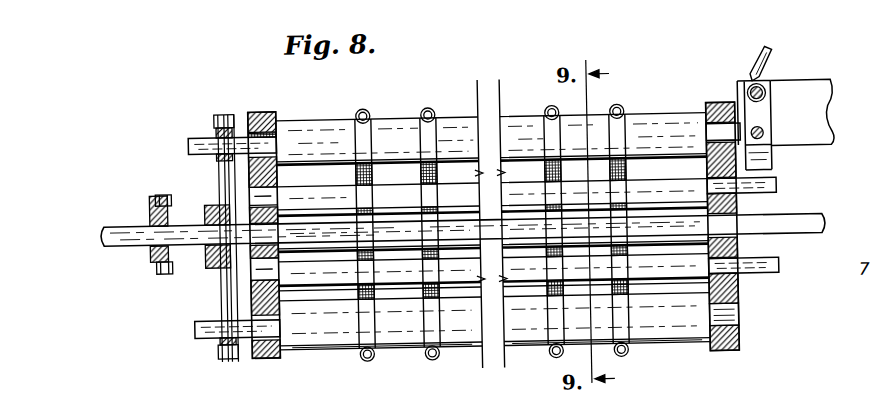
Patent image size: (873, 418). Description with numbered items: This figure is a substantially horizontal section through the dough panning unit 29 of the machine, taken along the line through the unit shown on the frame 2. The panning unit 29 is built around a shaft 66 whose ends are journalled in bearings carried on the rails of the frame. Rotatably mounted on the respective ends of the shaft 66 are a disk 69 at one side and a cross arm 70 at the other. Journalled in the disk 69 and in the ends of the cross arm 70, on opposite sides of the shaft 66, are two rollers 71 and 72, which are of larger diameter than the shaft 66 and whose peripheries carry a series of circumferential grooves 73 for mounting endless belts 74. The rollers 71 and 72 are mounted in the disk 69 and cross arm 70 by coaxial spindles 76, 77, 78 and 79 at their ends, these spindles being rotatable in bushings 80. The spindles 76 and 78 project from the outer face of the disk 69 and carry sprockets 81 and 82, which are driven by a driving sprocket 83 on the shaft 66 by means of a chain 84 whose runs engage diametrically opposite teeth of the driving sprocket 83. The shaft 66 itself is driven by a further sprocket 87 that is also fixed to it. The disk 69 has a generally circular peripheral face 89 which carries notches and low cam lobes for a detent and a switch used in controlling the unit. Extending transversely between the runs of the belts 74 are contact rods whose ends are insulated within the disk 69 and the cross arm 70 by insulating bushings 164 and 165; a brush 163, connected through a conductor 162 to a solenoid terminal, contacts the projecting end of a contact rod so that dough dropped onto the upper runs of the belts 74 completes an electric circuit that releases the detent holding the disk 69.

The frame plate 2 is at (833, 88).
The panning unit 29 is at (282, 349).
The shaft 66 is at (733, 253).
The disk 69 is at (280, 112).
The cross arm 70 is at (738, 298).
The roller 71 is at (662, 339).
The roller 72 is at (522, 121).
The circumferential grooves 73 is at (433, 128).
The endless belts 74 is at (628, 360).
The spindle 76 is at (197, 138).
The spindle 77 is at (712, 108).
The spindle 78 is at (210, 331).
The spindle 79 is at (738, 322).
The bushings 80 is at (730, 345).
The sprocket 81 is at (219, 348).
The sprocket 82 is at (222, 120).
The driving sprocket 83 is at (220, 287).
The chain 84 is at (222, 295).
The sprocket 87 is at (155, 250).
The peripheral face 89 is at (270, 356).
The conductor 162 is at (771, 62).
The brush 163 is at (773, 171).
The insulating bushing 164 is at (255, 181).
The insulating bushing 165 is at (733, 204).